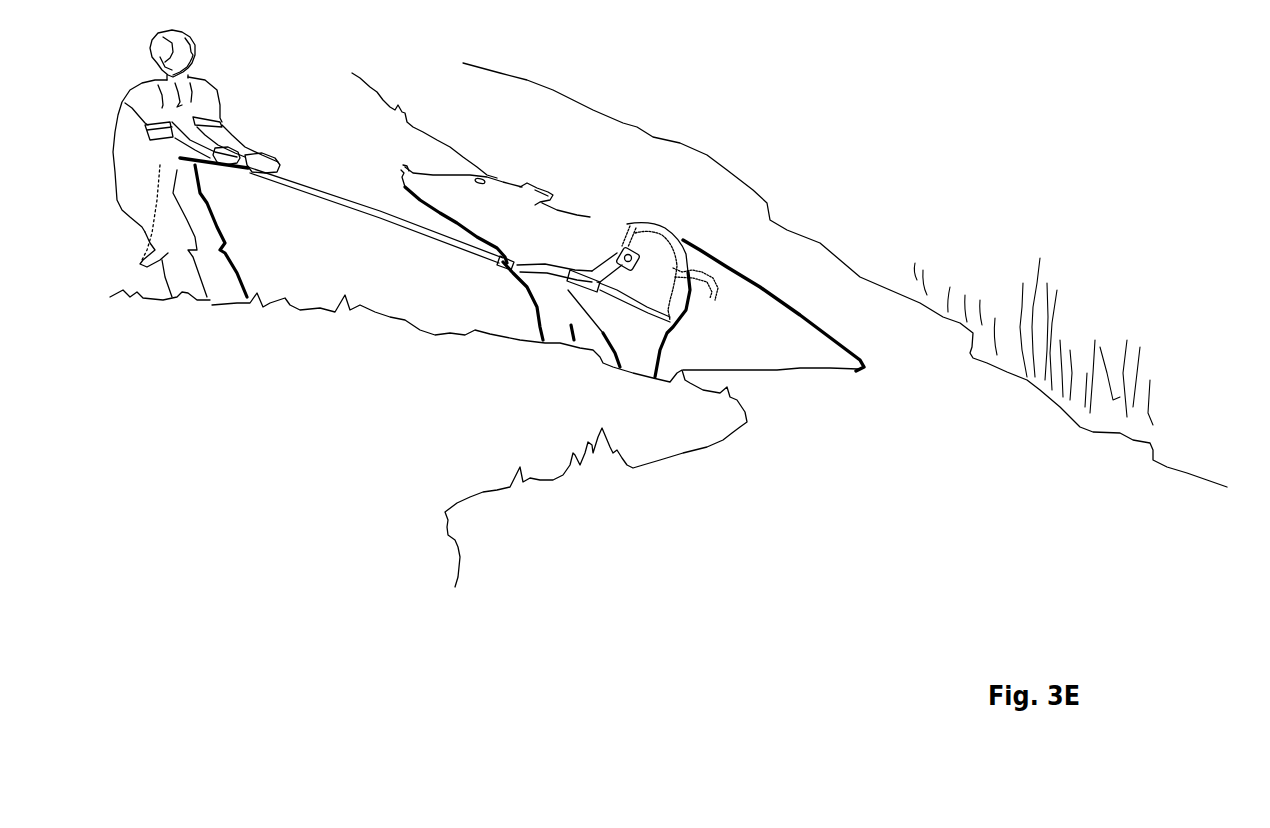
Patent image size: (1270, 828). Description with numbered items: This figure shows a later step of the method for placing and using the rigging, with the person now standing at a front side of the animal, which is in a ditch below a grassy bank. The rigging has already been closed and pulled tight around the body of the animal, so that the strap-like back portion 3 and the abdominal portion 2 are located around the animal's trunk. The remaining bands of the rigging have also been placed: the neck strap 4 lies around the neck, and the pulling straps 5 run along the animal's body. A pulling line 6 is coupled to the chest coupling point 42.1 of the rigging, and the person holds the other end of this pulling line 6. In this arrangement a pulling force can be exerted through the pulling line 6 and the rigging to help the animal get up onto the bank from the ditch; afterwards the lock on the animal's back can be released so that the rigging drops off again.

The abdominal portion 2 is at (687, 330).
The back portion 3 is at (683, 240).
The neck strap 4 is at (620, 213).
The pulling straps 5 is at (647, 307).
The pulling line 6 is at (373, 217).
The chest coupling point 42.1 is at (497, 267).